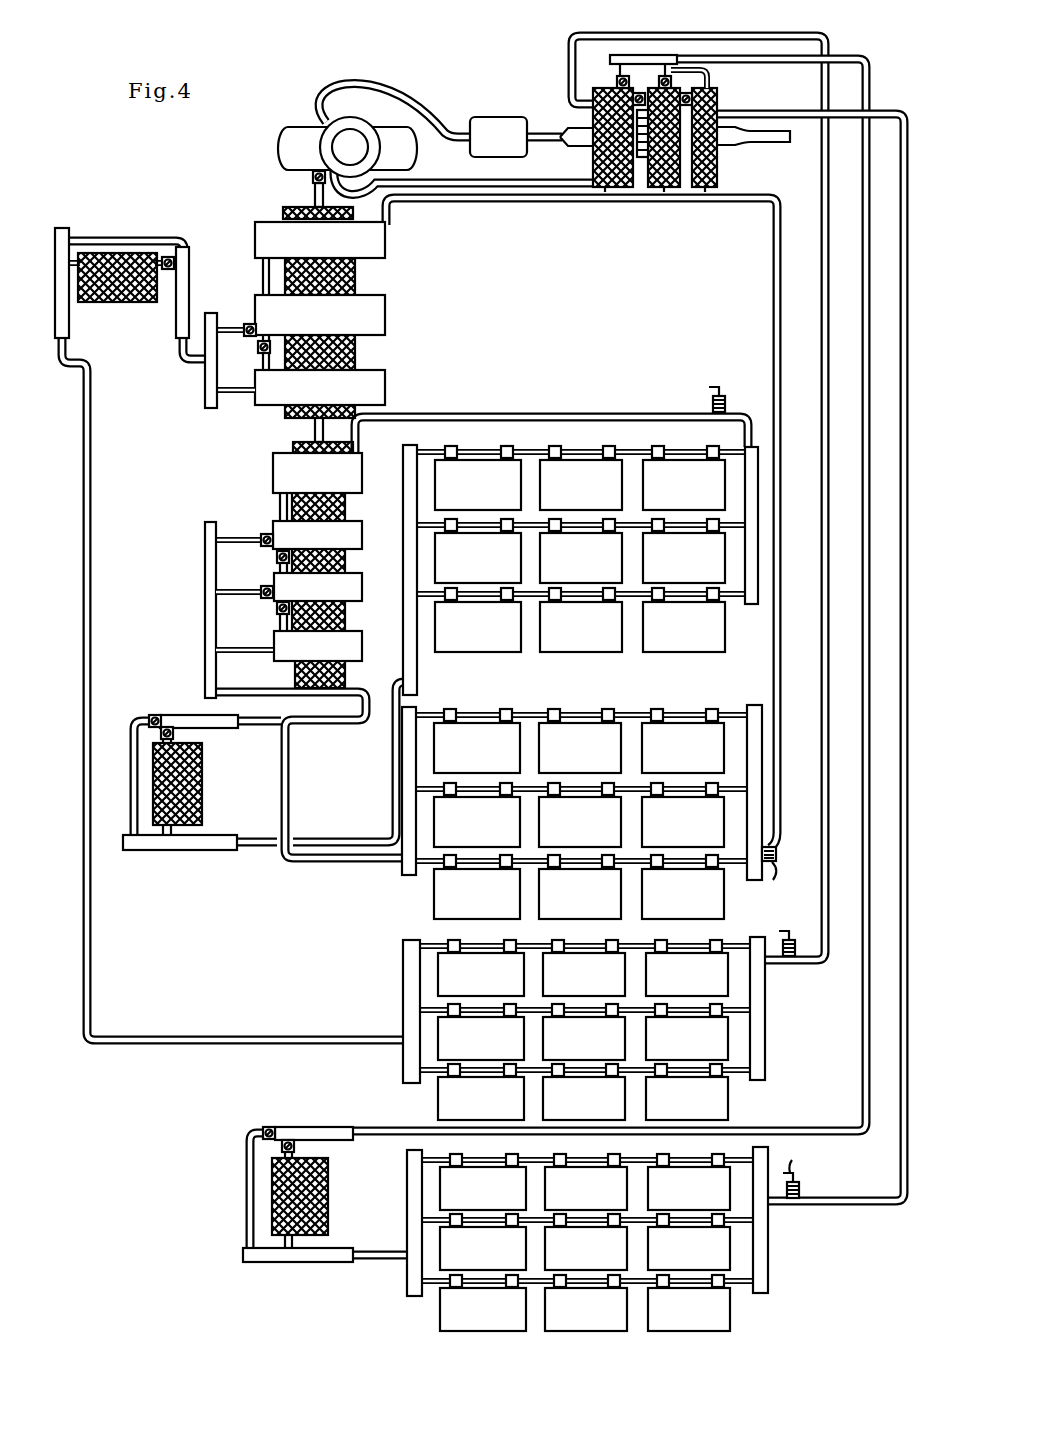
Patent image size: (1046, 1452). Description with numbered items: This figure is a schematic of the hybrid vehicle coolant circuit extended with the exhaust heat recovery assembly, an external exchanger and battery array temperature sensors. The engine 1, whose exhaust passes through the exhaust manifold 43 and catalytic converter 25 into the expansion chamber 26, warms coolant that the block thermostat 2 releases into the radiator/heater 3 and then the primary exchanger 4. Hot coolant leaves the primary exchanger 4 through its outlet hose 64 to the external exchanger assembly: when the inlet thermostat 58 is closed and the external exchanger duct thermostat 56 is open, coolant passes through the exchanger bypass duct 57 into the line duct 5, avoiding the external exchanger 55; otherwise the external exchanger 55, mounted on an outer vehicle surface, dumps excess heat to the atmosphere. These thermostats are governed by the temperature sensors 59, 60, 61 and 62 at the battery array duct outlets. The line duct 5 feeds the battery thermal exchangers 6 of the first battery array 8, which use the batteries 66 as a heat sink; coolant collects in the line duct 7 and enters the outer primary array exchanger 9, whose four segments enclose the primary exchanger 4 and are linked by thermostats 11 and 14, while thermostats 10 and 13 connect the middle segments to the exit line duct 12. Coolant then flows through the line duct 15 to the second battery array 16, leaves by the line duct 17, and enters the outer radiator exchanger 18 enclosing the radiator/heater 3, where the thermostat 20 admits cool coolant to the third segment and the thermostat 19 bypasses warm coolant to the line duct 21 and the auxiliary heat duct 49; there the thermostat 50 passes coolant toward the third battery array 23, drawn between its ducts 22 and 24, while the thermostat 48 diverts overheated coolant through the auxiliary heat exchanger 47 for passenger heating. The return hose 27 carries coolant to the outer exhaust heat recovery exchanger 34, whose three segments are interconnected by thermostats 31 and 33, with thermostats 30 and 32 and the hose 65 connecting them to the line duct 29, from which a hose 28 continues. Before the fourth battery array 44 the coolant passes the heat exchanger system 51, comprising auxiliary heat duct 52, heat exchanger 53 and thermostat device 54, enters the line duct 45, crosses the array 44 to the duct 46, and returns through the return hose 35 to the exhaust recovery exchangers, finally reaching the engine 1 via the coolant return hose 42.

The engine 1 is at (289, 140).
The block thermostat 2 is at (311, 178).
The radiator/heater 3 is at (283, 211).
The primary exchanger 4 is at (294, 446).
The line duct 5 is at (416, 690).
The battery thermal exchangers 6 is at (495, 450).
The line duct 7 is at (752, 606).
The first battery array 8 is at (582, 554).
The outer primary array exchanger 9 is at (364, 478).
The thermostat 10 is at (265, 535).
The thermostat 11 is at (277, 559).
The exit line duct 12 is at (205, 528).
The thermostat 13 is at (264, 597).
The thermostat 14 is at (278, 613).
The line duct 15 is at (409, 876).
The second battery array 16 is at (565, 916).
The line duct 17 is at (754, 705).
The outer radiator exchanger 18 is at (387, 240).
The thermostat 19 is at (248, 325).
The thermostat 20 is at (258, 348).
The line duct 21 is at (211, 313).
The inlet header 22 is at (405, 940).
The third battery array 23 is at (440, 1110).
The outlet header 24 is at (760, 1081).
The catalytic converter 25 is at (497, 117).
The expansion chamber 26 is at (567, 130).
The return hose 27 is at (575, 60).
The pipe 28 is at (838, 58).
The line duct 29 is at (610, 62).
The thermostat 30 is at (617, 82).
The thermostat 31 is at (640, 93).
The thermostat 32 is at (663, 76).
The thermostat 33 is at (688, 93).
The outer exhaust heat recovery exchanger 34 is at (705, 190).
The return hose 35 is at (760, 115).
The coolant return hose 42 is at (582, 180).
The exhaust manifold 43 is at (397, 98).
The fourth battery array 44 is at (443, 1312).
The line duct 45 is at (406, 1290).
The outlet header 46 is at (768, 1292).
The auxiliary heat exchanger 47 is at (106, 303).
The thermostat 48 is at (166, 258).
The auxiliary heat duct 49 is at (62, 228).
The thermostat 50 is at (184, 246).
The heat exchanger system 51 is at (329, 1191).
The auxiliary heat duct 52 is at (294, 1146).
The heat exchanger 53 is at (244, 1254).
The thermostat device 54 is at (264, 1130).
The external exchanger 55 is at (203, 786).
The external exchanger duct thermostat 56 is at (152, 716).
The exchanger bypass duct 57 is at (124, 838).
The inlet thermostat 58 is at (173, 735).
The temperature sensor 59 is at (722, 398).
The temperature sensor 60 is at (781, 852).
The temperature sensor 61 is at (795, 940).
The temperature sensor 62 is at (800, 1188).
The outlet hose 64 is at (313, 724).
The hose 65 is at (712, 78).
The batteries 66 is at (442, 652).